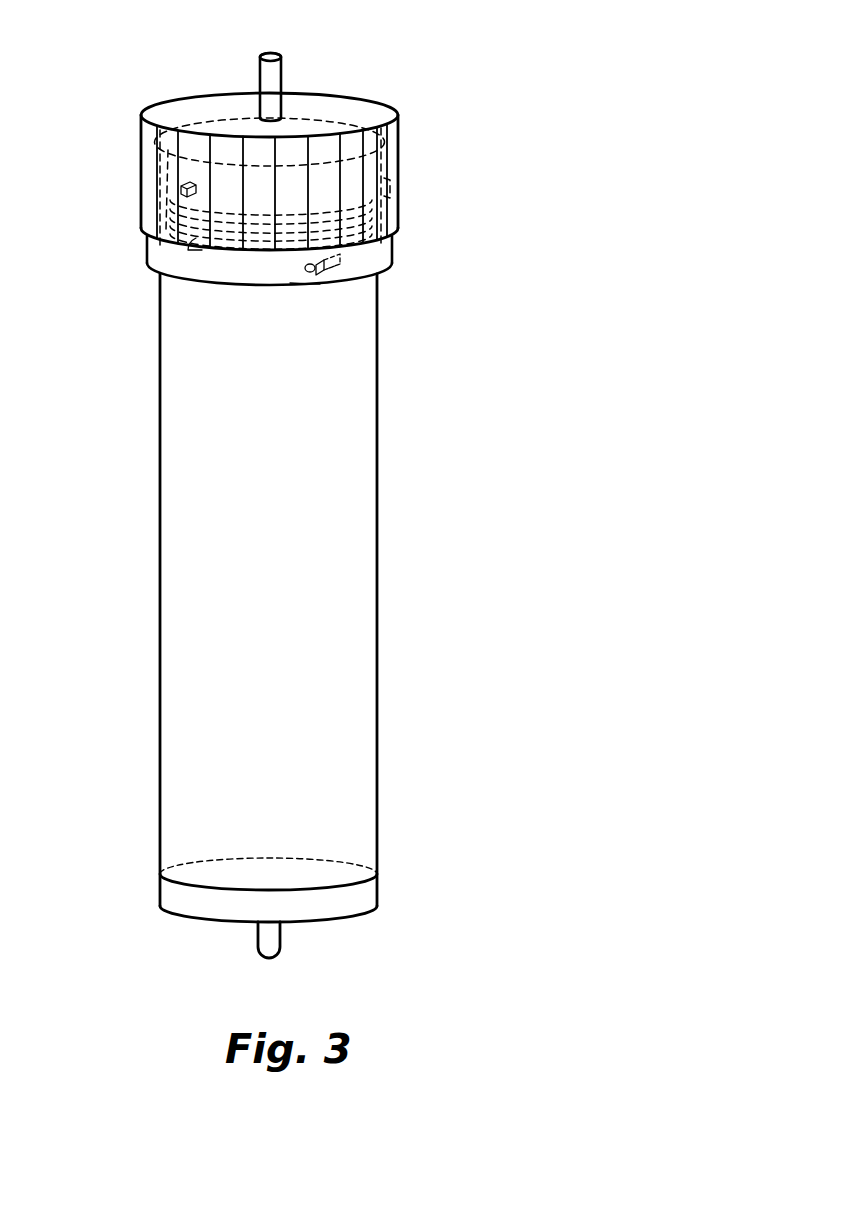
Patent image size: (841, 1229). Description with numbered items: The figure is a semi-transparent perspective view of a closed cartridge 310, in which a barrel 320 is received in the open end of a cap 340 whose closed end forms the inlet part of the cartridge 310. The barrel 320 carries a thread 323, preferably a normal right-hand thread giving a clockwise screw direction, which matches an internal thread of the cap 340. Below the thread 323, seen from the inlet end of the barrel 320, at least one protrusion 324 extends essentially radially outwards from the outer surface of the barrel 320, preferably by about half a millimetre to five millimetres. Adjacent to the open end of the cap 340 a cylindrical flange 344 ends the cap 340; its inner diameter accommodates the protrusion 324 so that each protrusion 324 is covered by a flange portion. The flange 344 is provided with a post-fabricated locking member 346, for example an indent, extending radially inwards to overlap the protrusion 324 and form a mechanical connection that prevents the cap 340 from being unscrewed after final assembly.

The cartridge 310 is at (413, 68).
The barrel 320 is at (395, 543).
The thread 323 is at (153, 202).
The protrusion 324 is at (352, 260).
The cap 340 is at (403, 188).
The flange 344 is at (383, 253).
The locking member 346 is at (305, 284).